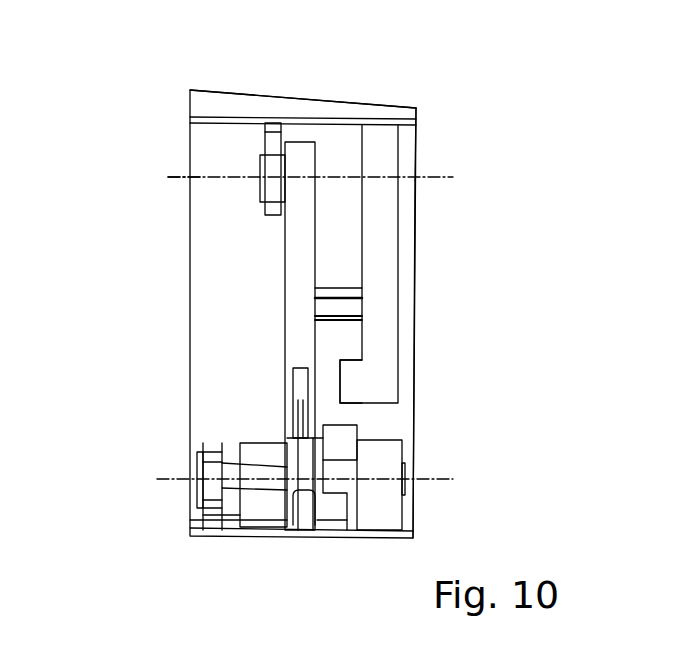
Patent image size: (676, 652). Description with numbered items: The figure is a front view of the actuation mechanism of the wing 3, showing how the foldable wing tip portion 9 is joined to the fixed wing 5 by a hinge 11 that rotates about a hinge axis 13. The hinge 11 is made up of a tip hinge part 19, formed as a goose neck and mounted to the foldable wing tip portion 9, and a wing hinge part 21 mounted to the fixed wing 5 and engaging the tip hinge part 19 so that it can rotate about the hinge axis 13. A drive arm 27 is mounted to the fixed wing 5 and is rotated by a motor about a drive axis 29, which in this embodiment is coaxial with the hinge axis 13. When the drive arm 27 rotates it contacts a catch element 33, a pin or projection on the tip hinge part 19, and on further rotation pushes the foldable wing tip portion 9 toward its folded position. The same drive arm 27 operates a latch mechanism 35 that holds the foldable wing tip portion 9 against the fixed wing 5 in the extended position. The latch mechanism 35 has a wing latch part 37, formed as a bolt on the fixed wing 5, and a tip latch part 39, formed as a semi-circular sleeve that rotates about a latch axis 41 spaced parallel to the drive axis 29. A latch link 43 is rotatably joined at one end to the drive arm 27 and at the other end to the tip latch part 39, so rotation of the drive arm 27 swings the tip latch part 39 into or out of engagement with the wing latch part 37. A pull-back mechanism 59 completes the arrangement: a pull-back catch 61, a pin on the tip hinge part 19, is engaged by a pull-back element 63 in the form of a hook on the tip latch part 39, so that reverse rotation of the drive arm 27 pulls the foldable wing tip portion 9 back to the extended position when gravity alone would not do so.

The wing 3 is at (120, 97).
The fixed wing 5 is at (208, 105).
The foldable wing tip portion 9 is at (207, 136).
The hinge 11 is at (398, 170).
The hinge axis 13 is at (440, 180).
The tip hinge part 19 is at (380, 263).
The wing hinge part 21 is at (405, 140).
The drive arm 27 is at (297, 257).
The drive axis 29 is at (183, 178).
The catch element 33 is at (328, 292).
The latch mechanism 35 is at (140, 478).
The wing latch part 37 is at (228, 475).
The tip latch part 39 is at (263, 455).
The latch axis 41 is at (447, 478).
The latch link 43 is at (300, 465).
The pull-back mechanism 59 is at (392, 423).
The pull-back catch 61 is at (350, 378).
The pull-back element 63 is at (347, 458).